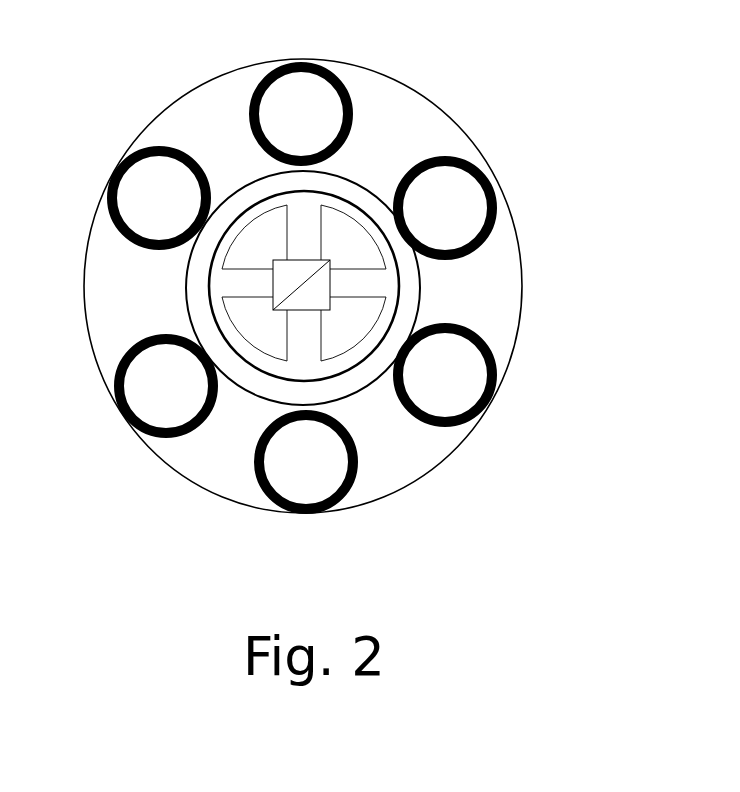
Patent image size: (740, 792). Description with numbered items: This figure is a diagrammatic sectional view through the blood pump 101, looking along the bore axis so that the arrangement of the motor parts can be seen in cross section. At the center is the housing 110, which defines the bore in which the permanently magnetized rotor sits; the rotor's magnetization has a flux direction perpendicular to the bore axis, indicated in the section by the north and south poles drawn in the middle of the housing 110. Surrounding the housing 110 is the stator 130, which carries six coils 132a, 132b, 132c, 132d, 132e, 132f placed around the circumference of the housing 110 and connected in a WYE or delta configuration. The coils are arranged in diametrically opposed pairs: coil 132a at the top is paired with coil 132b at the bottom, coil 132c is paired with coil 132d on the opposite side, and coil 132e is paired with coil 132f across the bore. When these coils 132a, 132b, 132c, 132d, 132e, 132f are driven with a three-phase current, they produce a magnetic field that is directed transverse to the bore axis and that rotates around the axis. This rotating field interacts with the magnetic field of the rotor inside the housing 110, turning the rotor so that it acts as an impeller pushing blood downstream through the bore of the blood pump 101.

The blood pump 101 is at (106, 77).
The housing 110 is at (375, 193).
The stator 130 is at (455, 125).
The coil 132a is at (253, 95).
The coil 132b is at (255, 470).
The coil 132c is at (118, 232).
The coil 132d is at (467, 422).
The coil 132e is at (481, 247).
The coil 132f is at (124, 350).